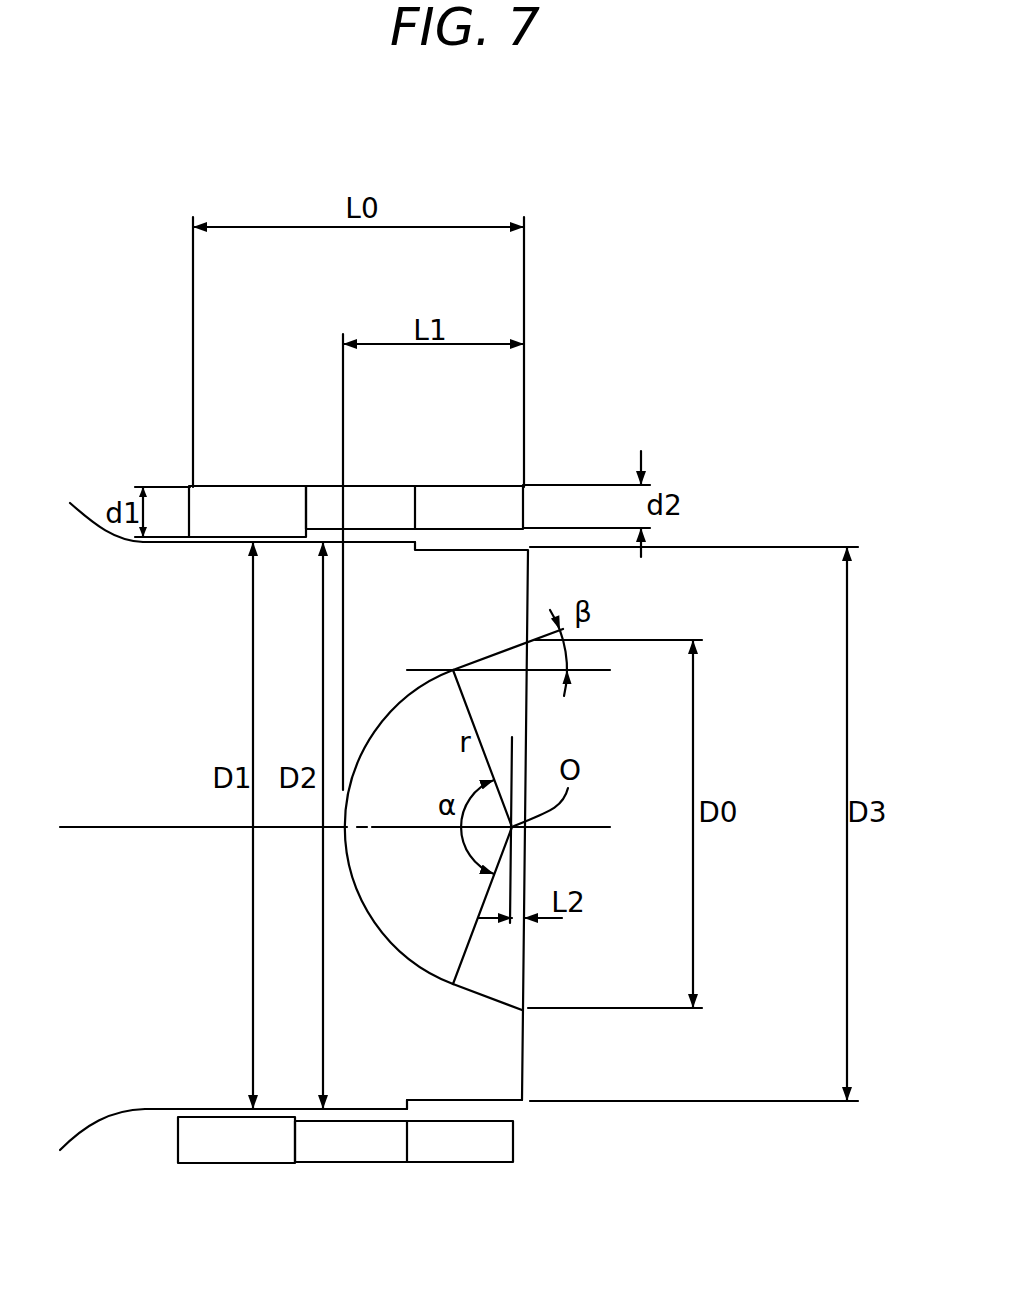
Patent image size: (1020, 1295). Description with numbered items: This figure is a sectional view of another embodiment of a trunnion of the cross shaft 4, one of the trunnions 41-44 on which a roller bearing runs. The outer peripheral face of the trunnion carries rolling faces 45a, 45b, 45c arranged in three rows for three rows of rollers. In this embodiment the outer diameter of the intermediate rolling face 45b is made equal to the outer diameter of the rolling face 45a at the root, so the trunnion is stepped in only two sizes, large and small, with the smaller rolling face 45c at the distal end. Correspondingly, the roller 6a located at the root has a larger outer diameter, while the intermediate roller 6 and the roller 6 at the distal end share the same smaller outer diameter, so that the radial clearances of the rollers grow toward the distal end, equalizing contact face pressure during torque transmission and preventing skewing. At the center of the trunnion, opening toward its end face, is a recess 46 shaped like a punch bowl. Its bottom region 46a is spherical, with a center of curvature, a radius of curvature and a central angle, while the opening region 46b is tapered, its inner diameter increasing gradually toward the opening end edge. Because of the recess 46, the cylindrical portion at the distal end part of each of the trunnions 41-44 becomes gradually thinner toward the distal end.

The cross shaft 4 is at (91, 1135).
The roller 6 is at (393, 502).
The roller at the root 6a is at (245, 502).
The trunnions 41-44 is at (533, 825).
The rolling face at the root 45a is at (221, 1113).
The intermediate rolling face 45b is at (367, 1110).
The smaller rolling face 45c is at (470, 1101).
The recess 46 is at (492, 804).
The bottom region 46a is at (373, 920).
The opening region 46b is at (497, 653).